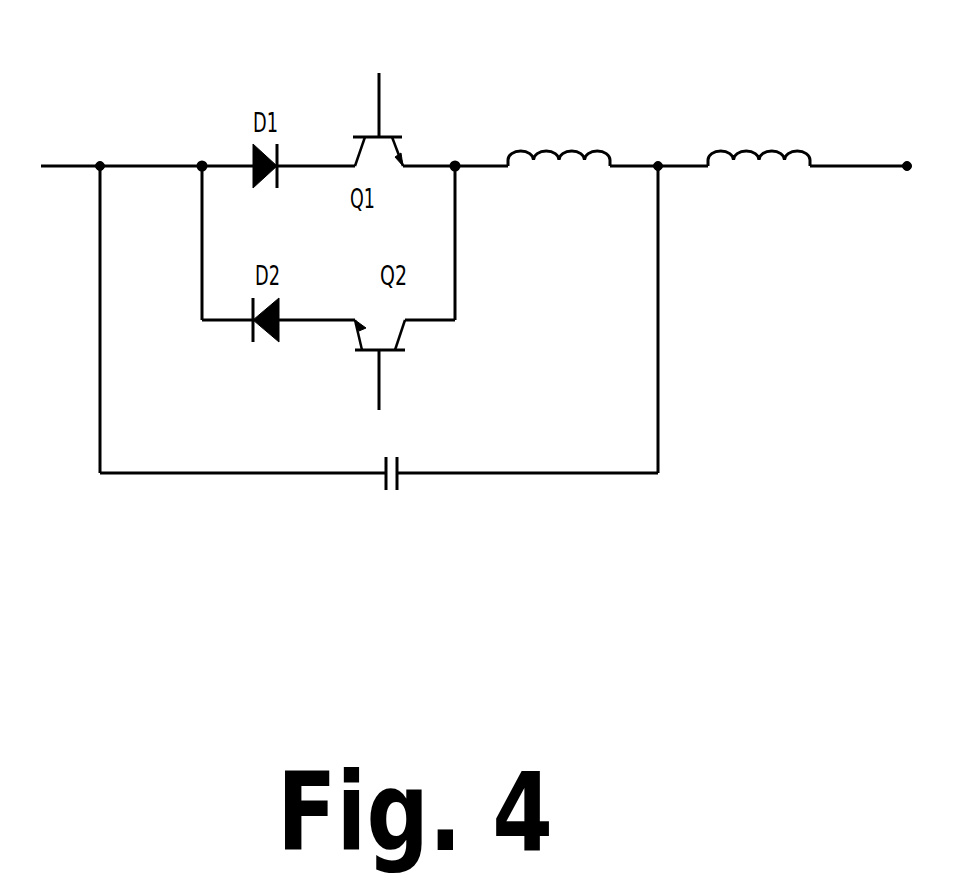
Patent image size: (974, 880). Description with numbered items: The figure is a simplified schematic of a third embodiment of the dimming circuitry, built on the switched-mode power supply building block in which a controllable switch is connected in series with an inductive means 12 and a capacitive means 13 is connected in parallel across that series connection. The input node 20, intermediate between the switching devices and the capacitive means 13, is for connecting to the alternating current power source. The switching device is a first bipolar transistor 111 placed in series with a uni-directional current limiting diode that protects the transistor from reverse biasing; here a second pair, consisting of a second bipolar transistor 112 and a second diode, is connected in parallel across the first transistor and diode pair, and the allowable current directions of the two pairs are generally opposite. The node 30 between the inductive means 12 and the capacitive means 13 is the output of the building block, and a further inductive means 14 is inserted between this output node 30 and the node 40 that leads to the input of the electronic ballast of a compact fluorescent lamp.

The input node 20 is at (99, 148).
The output node 30 is at (658, 149).
The output node 40 is at (925, 167).
The bipolar transistor 111 is at (378, 82).
The bipolar transistor 112 is at (402, 380).
The inductive means 12 is at (559, 162).
The inductor L2 14 is at (759, 161).
The capacitive means 13 is at (380, 479).